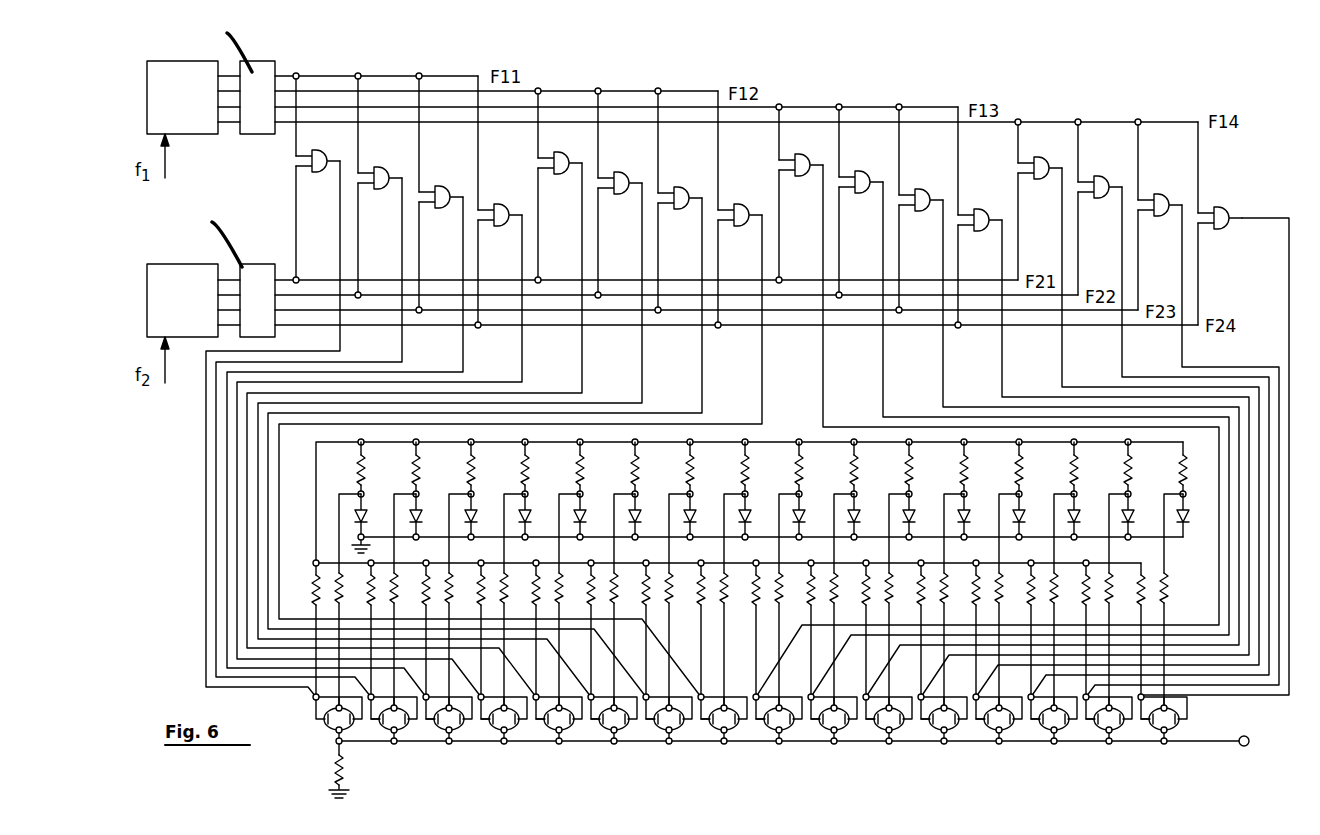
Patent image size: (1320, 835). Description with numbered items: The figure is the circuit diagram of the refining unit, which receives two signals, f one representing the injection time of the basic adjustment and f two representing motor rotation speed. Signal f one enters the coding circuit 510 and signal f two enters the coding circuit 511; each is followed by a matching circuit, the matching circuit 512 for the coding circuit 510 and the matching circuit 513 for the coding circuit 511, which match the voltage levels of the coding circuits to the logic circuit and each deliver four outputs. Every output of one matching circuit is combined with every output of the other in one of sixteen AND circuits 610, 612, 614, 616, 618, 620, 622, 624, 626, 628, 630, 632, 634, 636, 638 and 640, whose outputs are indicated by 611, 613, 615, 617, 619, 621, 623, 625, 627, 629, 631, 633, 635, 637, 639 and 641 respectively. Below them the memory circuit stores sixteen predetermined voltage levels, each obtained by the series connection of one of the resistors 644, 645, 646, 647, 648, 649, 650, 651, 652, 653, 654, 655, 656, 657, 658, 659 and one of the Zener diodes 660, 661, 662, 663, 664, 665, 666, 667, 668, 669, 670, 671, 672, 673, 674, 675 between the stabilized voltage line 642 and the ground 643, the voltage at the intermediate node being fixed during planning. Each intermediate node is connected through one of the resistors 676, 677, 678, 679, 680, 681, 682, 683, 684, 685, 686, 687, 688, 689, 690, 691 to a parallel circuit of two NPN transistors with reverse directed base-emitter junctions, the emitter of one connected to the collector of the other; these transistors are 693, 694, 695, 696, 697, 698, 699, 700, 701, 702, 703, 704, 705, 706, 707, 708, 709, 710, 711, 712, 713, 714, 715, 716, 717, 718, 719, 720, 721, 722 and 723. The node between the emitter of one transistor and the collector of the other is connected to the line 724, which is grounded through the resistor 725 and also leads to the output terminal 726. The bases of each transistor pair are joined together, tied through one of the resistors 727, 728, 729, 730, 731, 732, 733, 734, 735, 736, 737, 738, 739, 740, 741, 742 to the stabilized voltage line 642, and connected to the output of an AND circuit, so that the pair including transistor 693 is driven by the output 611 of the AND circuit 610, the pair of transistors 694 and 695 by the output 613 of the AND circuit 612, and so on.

The coding circuit 510 is at (187, 135).
The coding circuit 511 is at (187, 264).
The matching circuit 512 is at (258, 135).
The matching circuit 513 is at (258, 264).
The AND circuit 610 is at (319, 150).
The output of AND circuit 611 is at (339, 212).
The AND circuit 612 is at (381, 167).
The output of AND circuit 613 is at (401, 223).
The AND circuit 614 is at (442, 186).
The output of AND circuit 615 is at (462, 232).
The AND circuit 616 is at (501, 204).
The output of AND circuit 617 is at (521, 241).
The AND circuit 618 is at (561, 152).
The output of AND circuit 619 is at (581, 212).
The AND circuit 620 is at (621, 172).
The output of AND circuit 621 is at (641, 223).
The AND circuit 622 is at (681, 187).
The output of AND circuit 623 is at (701, 232).
The AND circuit 624 is at (741, 204).
The output of AND circuit 625 is at (761, 241).
The AND circuit 626 is at (802, 154).
The output of AND circuit 627 is at (822, 212).
The AND circuit 628 is at (862, 171).
The output of AND circuit 629 is at (882, 223).
The AND circuit 630 is at (922, 189).
The output of AND circuit 631 is at (942, 231).
The AND circuit 632 is at (981, 209).
The output of AND circuit 633 is at (1001, 242).
The AND circuit 634 is at (1041, 157).
The output of AND circuit 635 is at (1061, 212).
The AND circuit 636 is at (1101, 176).
The output of AND circuit 637 is at (1121, 232).
The AND circuit 638 is at (1161, 194).
The output of AND circuit 639 is at (1181, 250).
The AND circuit 640 is at (1224, 207).
The output of AND circuit 641 is at (1288, 270).
The stabilized voltage line 642 is at (370, 443).
The ground 643 is at (378, 549).
The resistor 644 is at (364, 470).
The resistor 645 is at (419, 470).
The resistor 646 is at (474, 470).
The resistor 647 is at (528, 470).
The resistor 648 is at (583, 470).
The resistor 649 is at (638, 470).
The resistor 650 is at (693, 470).
The resistor 651 is at (748, 470).
The resistor 652 is at (802, 470).
The resistor 653 is at (857, 470).
The resistor 654 is at (912, 470).
The resistor 655 is at (967, 470).
The resistor 656 is at (1022, 470).
The resistor 657 is at (1077, 470).
The resistor 658 is at (1131, 470).
The resistor 659 is at (1186, 470).
The Zener diode 660 is at (365, 512).
The Zener diode 661 is at (422, 527).
The Zener diode 662 is at (477, 527).
The Zener diode 663 is at (531, 527).
The Zener diode 664 is at (586, 527).
The Zener diode 665 is at (641, 527).
The Zener diode 666 is at (696, 527).
The Zener diode 667 is at (751, 527).
The Zener diode 668 is at (805, 527).
The Zener diode 669 is at (860, 527).
The Zener diode 670 is at (915, 527).
The Zener diode 671 is at (970, 527).
The Zener diode 672 is at (1025, 527).
The Zener diode 673 is at (1080, 527).
The Zener diode 674 is at (1134, 527).
The Zener diode 675 is at (1189, 527).
The resistor 676 is at (342, 592).
The resistor 677 is at (397, 592).
The resistor 678 is at (452, 592).
The resistor 679 is at (507, 592).
The resistor 680 is at (562, 592).
The resistor 681 is at (617, 592).
The resistor 682 is at (672, 592).
The resistor 683 is at (727, 592).
The resistor 684 is at (782, 592).
The resistor 685 is at (837, 592).
The resistor 686 is at (892, 592).
The resistor 687 is at (947, 592).
The resistor 688 is at (1002, 592).
The resistor 689 is at (1057, 592).
The resistor 690 is at (1112, 592).
The resistor 691 is at (1167, 592).
The NPN transistor 693 is at (356, 732).
The NPN transistor 694 is at (376, 735).
The NPN transistor 695 is at (411, 732).
The NPN transistor 696 is at (431, 735).
The NPN transistor 697 is at (466, 732).
The NPN transistor 698 is at (486, 735).
The NPN transistor 699 is at (521, 732).
The NPN transistor 700 is at (541, 735).
The NPN transistor 701 is at (576, 732).
The NPN transistor 702 is at (596, 735).
The NPN transistor 703 is at (631, 732).
The NPN transistor 704 is at (651, 735).
The NPN transistor 705 is at (686, 732).
The NPN transistor 706 is at (706, 735).
The NPN transistor 707 is at (741, 732).
The NPN transistor 708 is at (761, 735).
The NPN transistor 709 is at (796, 732).
The NPN transistor 710 is at (816, 735).
The NPN transistor 711 is at (851, 732).
The NPN transistor 712 is at (871, 735).
The NPN transistor 713 is at (906, 732).
The NPN transistor 714 is at (926, 735).
The NPN transistor 715 is at (961, 732).
The NPN transistor 716 is at (981, 735).
The NPN transistor 717 is at (1016, 732).
The NPN transistor 718 is at (1036, 735).
The NPN transistor 719 is at (1071, 732).
The NPN transistor 720 is at (1091, 735).
The NPN transistor 721 is at (1126, 732).
The NPN transistor 722 is at (1146, 735).
The NPN transistor 723 is at (1181, 732).
The line 724 is at (1217, 748).
The resistor 725 is at (335, 771).
The output terminal 726 is at (1244, 736).
The resistor 727 is at (313, 594).
The resistor 728 is at (368, 594).
The resistor 729 is at (423, 594).
The resistor 730 is at (478, 594).
The resistor 731 is at (533, 594).
The resistor 732 is at (588, 594).
The resistor 733 is at (643, 594).
The resistor 734 is at (698, 594).
The resistor 735 is at (753, 594).
The resistor 736 is at (808, 594).
The resistor 737 is at (863, 594).
The resistor 738 is at (918, 594).
The resistor 739 is at (973, 594).
The resistor 740 is at (1028, 594).
The resistor 741 is at (1083, 594).
The resistor 742 is at (1138, 594).